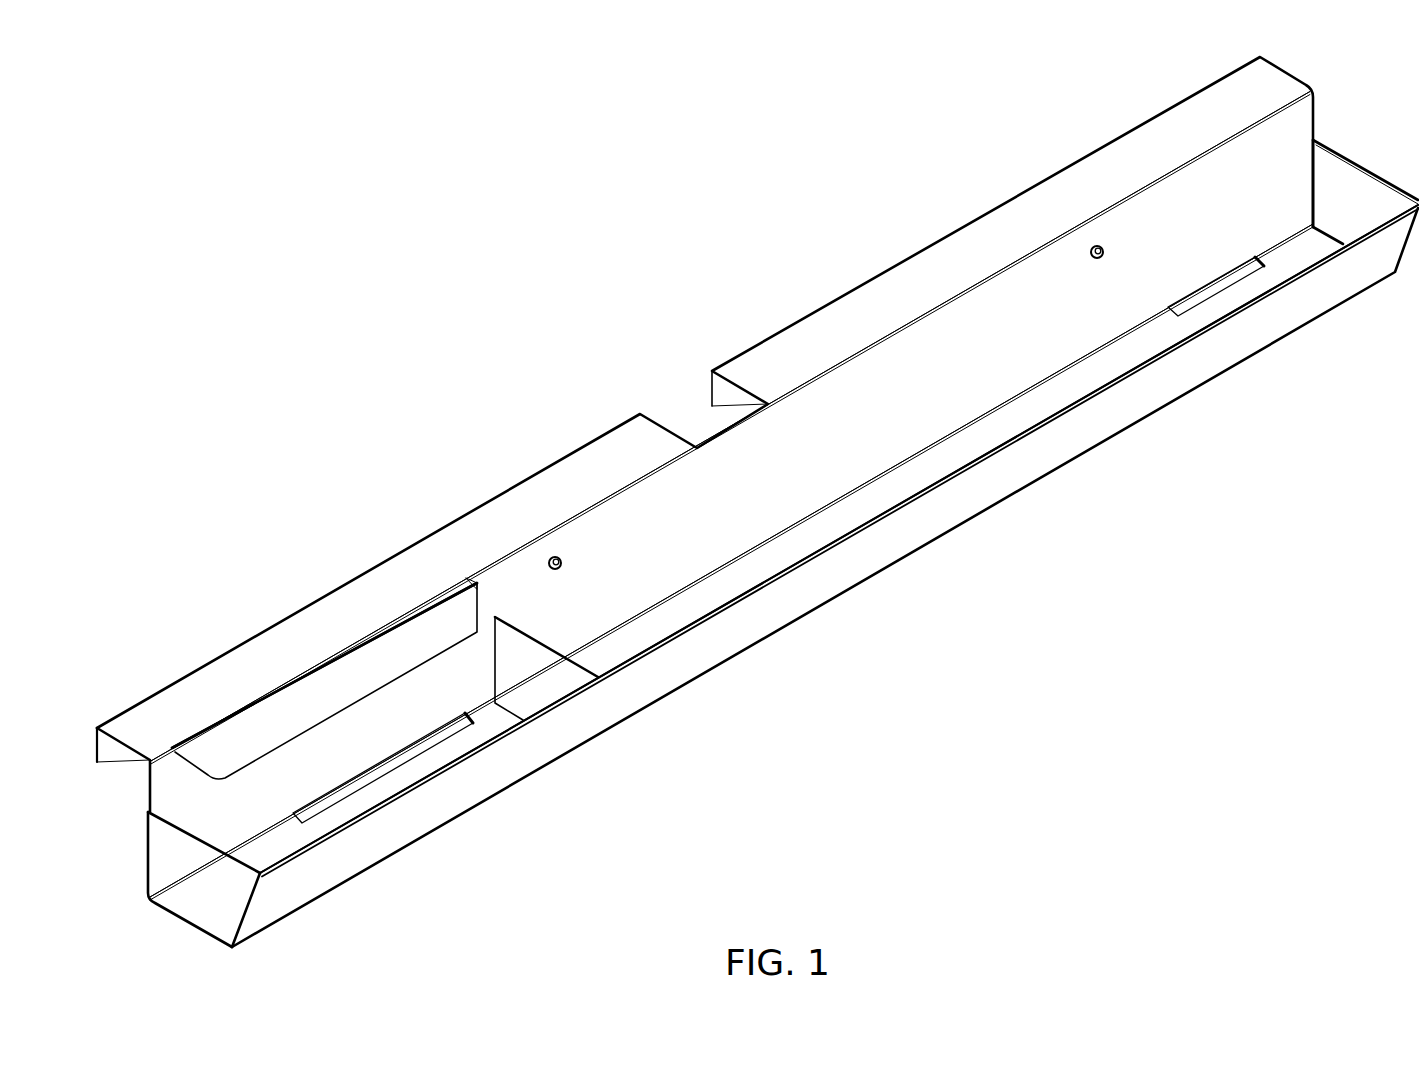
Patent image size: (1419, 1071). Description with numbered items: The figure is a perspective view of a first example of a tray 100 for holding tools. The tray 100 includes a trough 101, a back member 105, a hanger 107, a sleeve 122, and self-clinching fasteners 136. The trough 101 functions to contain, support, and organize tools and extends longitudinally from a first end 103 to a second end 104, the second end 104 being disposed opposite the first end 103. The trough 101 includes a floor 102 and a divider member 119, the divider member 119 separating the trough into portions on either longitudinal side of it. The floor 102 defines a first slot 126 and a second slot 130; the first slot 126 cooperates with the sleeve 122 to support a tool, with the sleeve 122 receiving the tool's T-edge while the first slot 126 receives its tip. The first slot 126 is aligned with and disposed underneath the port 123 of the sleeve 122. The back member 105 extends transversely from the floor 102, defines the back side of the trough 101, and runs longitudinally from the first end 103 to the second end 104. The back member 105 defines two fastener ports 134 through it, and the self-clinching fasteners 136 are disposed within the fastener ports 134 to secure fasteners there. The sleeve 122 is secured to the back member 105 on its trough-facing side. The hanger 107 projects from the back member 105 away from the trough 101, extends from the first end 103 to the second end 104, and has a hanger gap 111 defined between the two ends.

The tray 100 is at (226, 511).
The trough 101 is at (569, 739).
The floor 102 is at (980, 435).
The first end 103 is at (163, 850).
The second end 104 is at (1346, 165).
The back member 105 is at (672, 520).
The hanger 107 is at (444, 514).
The hanger gap 111 is at (713, 376).
The divider member 119 is at (526, 640).
The sleeve 122 is at (484, 587).
The port 123 is at (427, 608).
The first slot 126 is at (447, 728).
The second slot 130 is at (1247, 270).
The fastener ports 134 is at (559, 556).
The self-clinching fasteners 136 is at (561, 568).